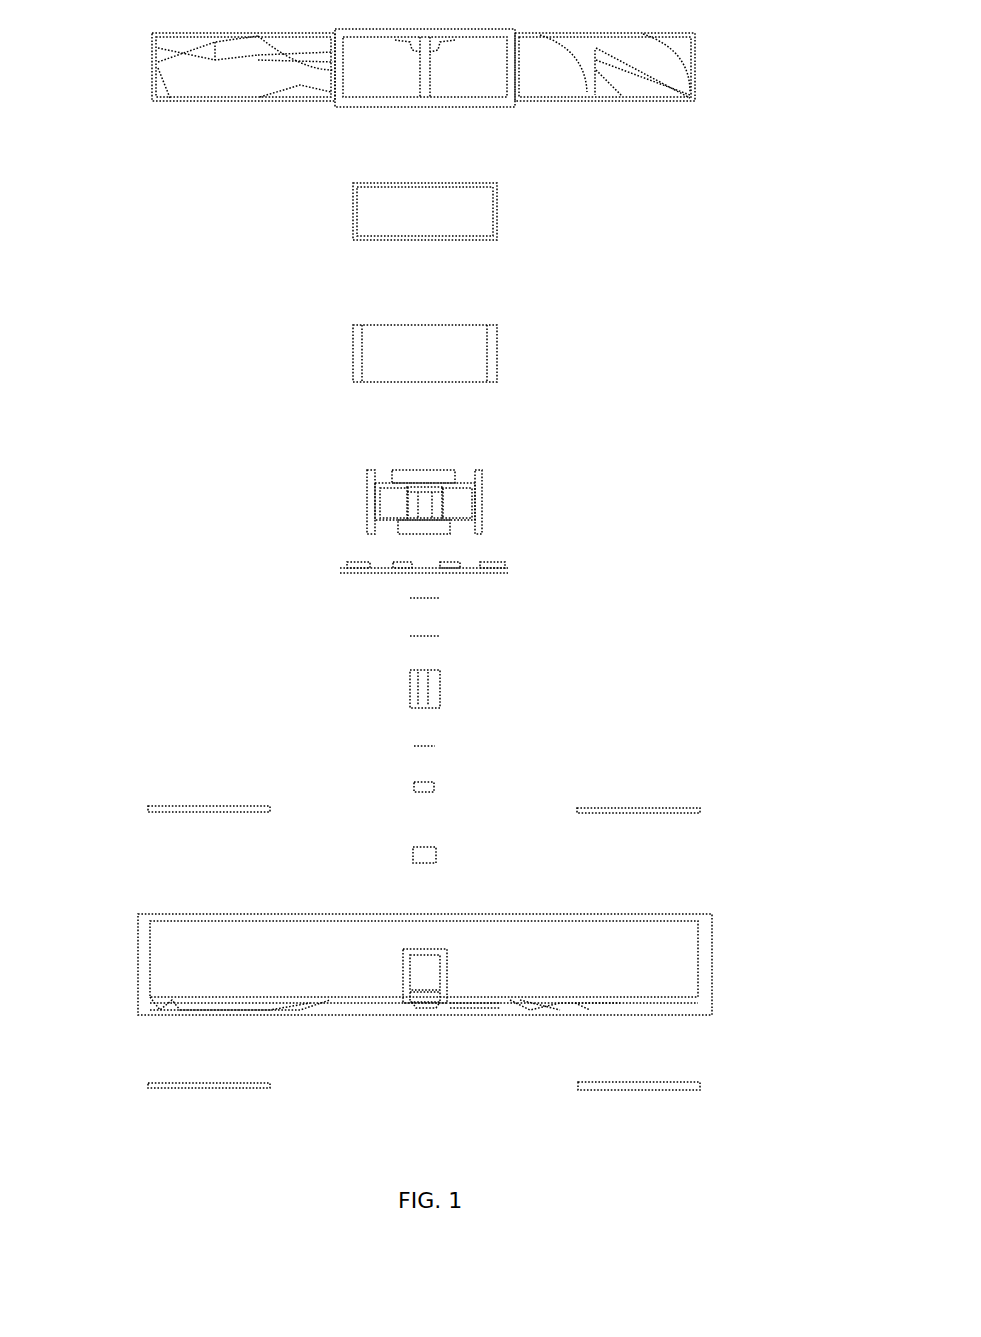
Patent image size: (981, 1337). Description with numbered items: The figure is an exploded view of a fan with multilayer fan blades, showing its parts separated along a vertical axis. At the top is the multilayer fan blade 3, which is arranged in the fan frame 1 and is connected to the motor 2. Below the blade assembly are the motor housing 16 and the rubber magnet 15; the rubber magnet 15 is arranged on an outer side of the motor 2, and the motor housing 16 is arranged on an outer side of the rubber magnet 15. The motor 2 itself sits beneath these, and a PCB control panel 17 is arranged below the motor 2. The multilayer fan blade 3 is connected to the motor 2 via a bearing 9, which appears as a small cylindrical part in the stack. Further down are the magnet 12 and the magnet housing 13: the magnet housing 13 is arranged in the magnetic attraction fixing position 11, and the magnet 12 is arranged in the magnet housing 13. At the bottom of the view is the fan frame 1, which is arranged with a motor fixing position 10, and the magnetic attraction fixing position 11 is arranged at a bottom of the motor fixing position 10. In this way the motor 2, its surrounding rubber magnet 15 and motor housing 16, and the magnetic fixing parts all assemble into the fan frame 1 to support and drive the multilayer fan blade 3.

The fan frame 1 is at (712, 983).
The motor 2 is at (500, 503).
The multilayer fan blade 3 is at (700, 68).
The bearing 9 is at (440, 687).
The motor fixing position 10 is at (403, 963).
The magnetic attraction fixing position 11 is at (432, 1008).
The magnet 12 is at (434, 787).
The magnet housing 13 is at (436, 857).
The rubber magnet 15 is at (497, 347).
The motor housing 16 is at (497, 199).
The PCB control panel 17 is at (508, 568).